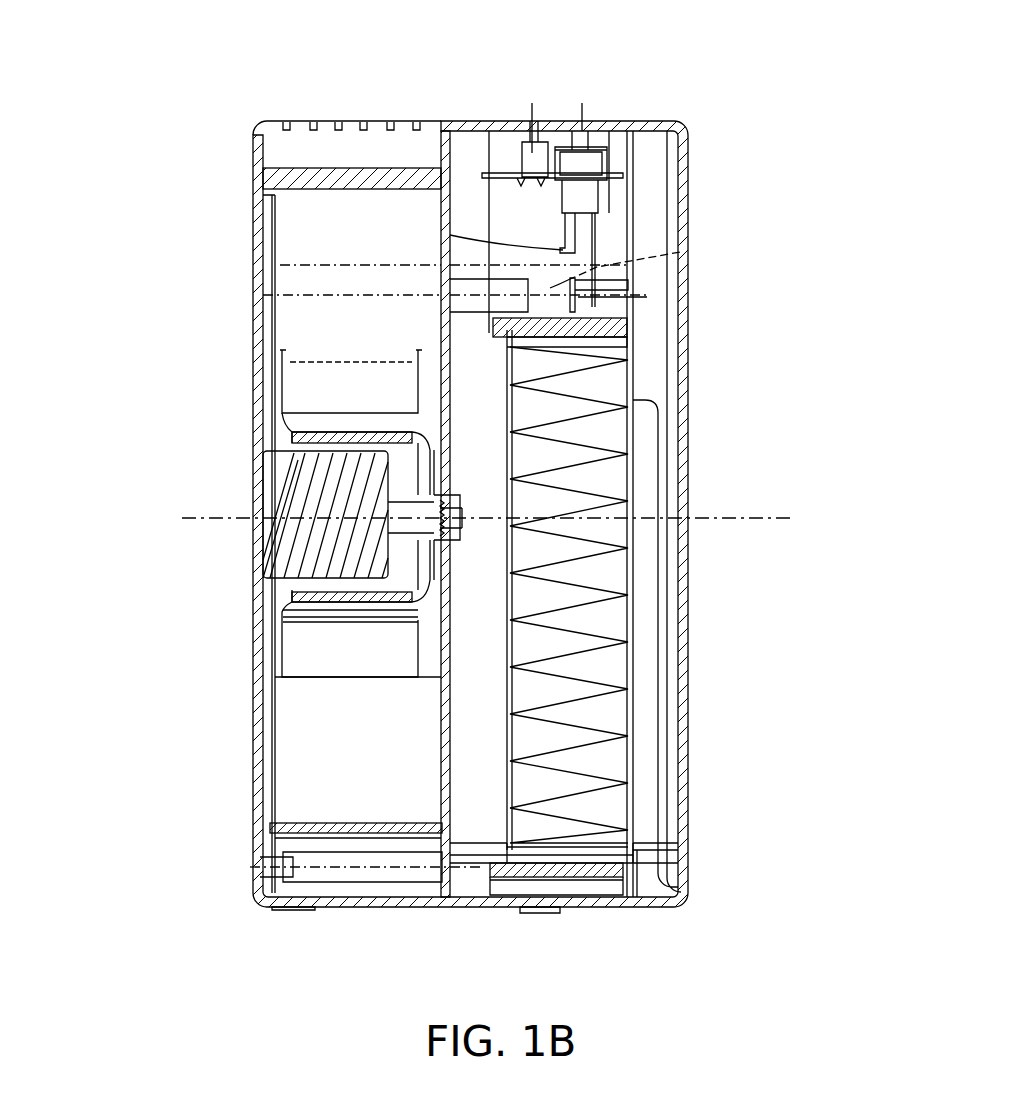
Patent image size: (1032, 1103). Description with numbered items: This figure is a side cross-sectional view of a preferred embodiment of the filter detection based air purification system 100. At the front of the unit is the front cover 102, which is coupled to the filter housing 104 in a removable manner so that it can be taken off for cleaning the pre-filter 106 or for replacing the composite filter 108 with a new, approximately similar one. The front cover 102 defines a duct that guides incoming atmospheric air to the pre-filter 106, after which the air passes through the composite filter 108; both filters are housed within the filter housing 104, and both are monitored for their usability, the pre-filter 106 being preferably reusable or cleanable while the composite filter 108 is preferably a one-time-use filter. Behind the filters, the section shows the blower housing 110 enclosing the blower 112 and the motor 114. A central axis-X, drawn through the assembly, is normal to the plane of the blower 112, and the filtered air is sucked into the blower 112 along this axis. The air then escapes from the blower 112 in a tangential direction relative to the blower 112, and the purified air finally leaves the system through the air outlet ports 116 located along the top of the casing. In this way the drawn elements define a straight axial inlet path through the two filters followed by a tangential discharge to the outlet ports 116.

The filter detection based air purification system 100 is at (144, 900).
The front cover 102 is at (688, 203).
The filter housing 104 is at (673, 122).
The pre-filter 106 is at (633, 752).
The composite filter 108 is at (612, 381).
The blower housing 110 is at (291, 776).
The blower 112 is at (326, 390).
The motor 114 is at (282, 540).
The air outlet ports 116 is at (341, 122).